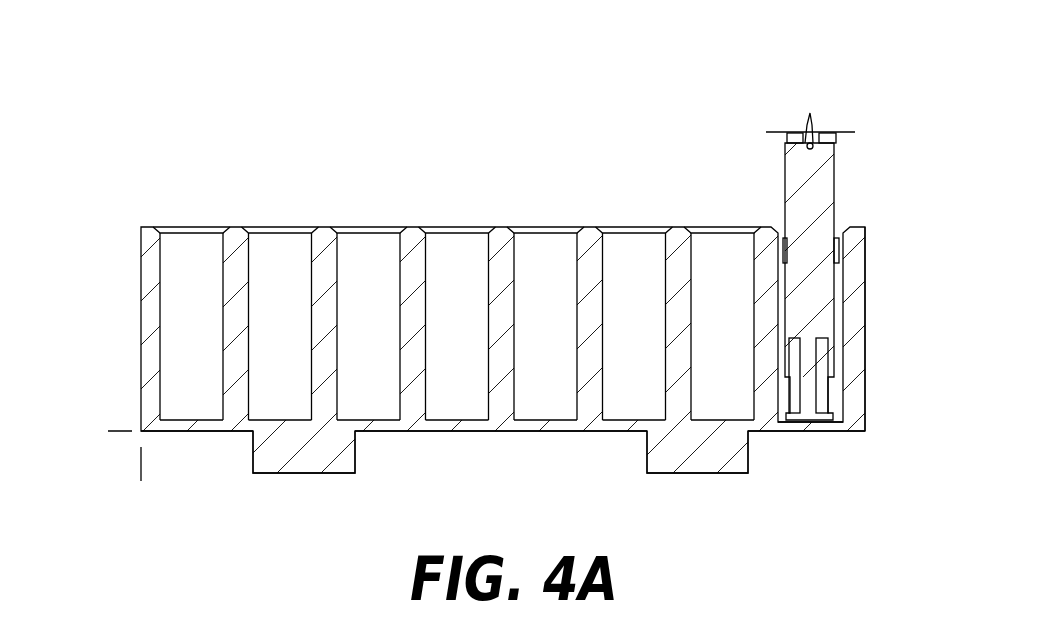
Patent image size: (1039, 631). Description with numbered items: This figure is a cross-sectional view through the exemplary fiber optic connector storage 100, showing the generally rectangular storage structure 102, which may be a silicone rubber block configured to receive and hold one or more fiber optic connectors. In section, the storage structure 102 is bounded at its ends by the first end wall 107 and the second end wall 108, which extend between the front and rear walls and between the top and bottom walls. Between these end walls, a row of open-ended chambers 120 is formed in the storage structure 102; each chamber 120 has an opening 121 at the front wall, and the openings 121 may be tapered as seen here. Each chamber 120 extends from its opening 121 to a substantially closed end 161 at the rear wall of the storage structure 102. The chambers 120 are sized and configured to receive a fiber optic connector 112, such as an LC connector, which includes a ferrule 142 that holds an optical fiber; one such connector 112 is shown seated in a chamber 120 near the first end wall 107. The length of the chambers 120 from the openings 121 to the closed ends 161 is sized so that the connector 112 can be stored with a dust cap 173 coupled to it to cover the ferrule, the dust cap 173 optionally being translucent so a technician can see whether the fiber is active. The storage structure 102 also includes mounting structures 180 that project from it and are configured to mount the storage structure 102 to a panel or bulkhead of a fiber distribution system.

The fiber optic connector storage 100 is at (90, 94).
The storage structure 102 is at (866, 433).
The first end wall 107 is at (866, 310).
The second end wall 108 is at (140, 326).
The fiber optic connector 112 is at (851, 199).
The chamber 120 is at (380, 325).
The opening 121 is at (182, 231).
The ferrule 142 is at (811, 386).
The substantially closed end 161 is at (180, 421).
The dust cap 173 is at (805, 395).
The mounting structure 180 is at (305, 461).